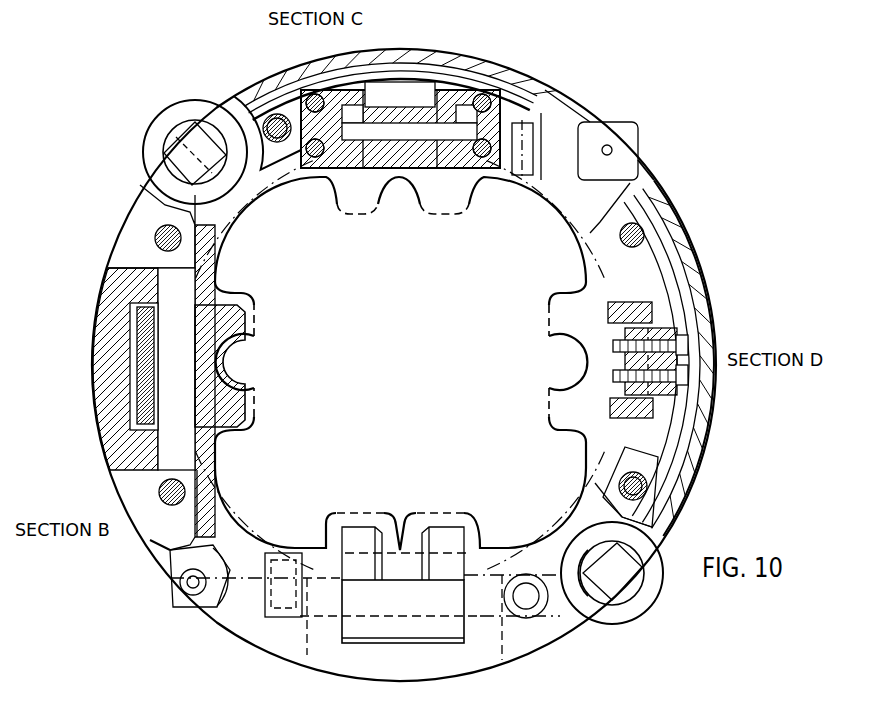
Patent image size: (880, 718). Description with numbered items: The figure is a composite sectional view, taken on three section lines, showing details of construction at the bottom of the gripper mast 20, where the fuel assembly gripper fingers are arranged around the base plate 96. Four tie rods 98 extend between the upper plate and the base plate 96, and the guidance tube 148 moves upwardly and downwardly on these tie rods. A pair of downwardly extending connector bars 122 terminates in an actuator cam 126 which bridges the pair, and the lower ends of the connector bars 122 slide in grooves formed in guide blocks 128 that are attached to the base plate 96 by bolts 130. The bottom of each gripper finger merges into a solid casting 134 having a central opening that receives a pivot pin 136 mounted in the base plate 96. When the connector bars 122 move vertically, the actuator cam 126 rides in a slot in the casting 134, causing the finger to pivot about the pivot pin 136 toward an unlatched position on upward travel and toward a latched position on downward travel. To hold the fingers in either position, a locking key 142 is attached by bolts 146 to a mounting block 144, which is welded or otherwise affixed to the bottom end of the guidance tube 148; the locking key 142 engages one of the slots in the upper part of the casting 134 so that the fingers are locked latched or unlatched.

The gripper mast 20 is at (516, 72).
The base plate 96 is at (96, 325).
The tie rods 98 is at (156, 239).
The connector bars 122 is at (406, 108).
The actuator cam 126 is at (388, 137).
The guide blocks 128 is at (333, 92).
The bolts 130 is at (313, 156).
The casting 134 is at (140, 378).
The pivot pin 136 is at (165, 448).
The locking key 142 is at (623, 362).
The mounting block 144 is at (668, 300).
The bolts 146 is at (688, 370).
The guidance tube 148 is at (672, 258).